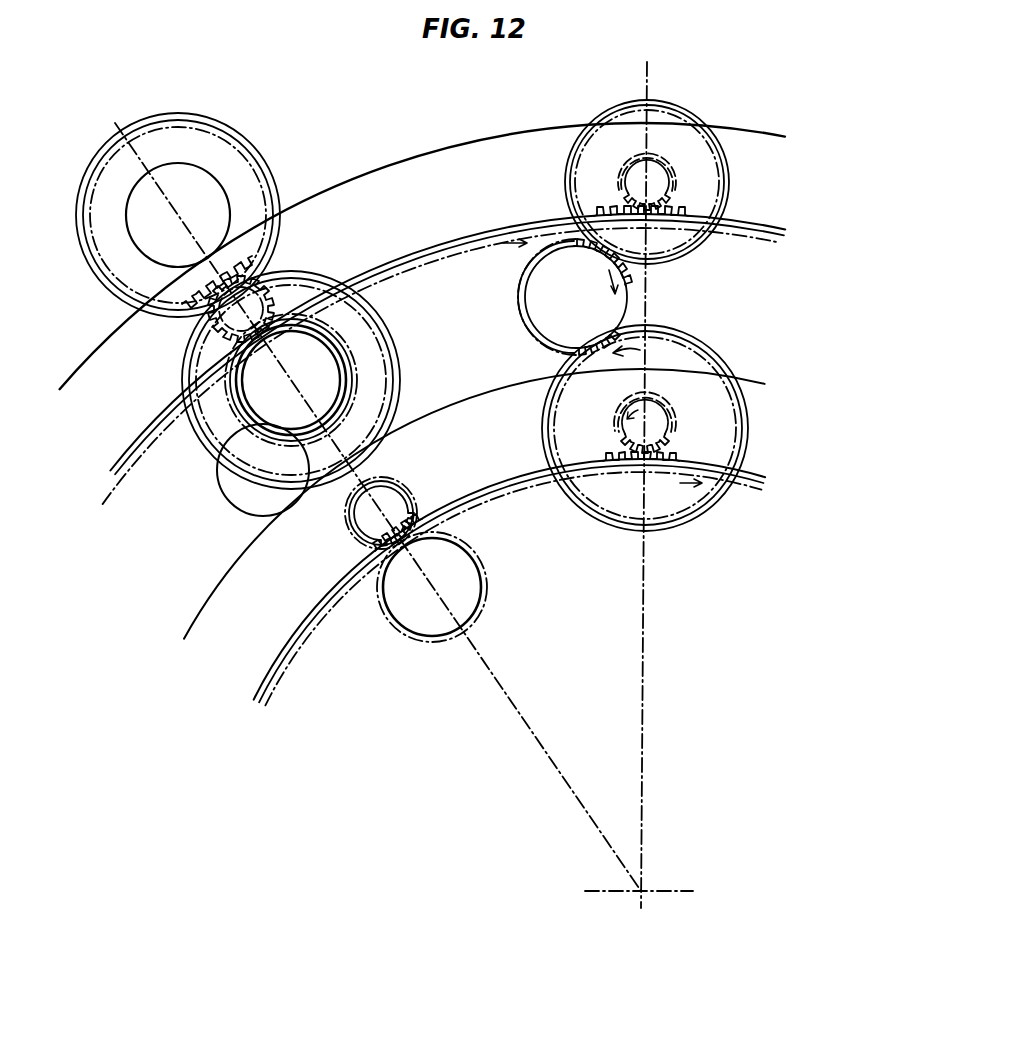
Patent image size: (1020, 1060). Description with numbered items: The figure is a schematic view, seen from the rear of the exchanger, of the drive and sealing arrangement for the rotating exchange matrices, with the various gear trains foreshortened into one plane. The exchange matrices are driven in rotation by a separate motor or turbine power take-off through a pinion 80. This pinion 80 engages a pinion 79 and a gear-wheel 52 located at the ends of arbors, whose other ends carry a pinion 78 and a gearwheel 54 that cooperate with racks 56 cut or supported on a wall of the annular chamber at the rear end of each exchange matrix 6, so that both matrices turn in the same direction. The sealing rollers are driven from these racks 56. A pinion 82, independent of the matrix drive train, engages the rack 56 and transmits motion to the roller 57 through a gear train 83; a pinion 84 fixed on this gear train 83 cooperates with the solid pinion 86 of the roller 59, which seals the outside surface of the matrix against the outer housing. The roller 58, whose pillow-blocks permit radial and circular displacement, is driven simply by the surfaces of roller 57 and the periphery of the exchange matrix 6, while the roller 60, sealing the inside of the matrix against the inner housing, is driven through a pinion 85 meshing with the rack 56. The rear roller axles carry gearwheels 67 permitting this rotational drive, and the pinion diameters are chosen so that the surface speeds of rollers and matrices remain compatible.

The exchange matrix 6 is at (126, 419).
The gear-wheel 52 is at (573, 393).
The gearwheel 54 is at (633, 430).
The rack 56 is at (436, 250).
The roller 57 is at (325, 367).
The roller 58 is at (238, 487).
The roller 59 is at (213, 190).
The roller 60 is at (412, 610).
The gearwheel 67 is at (425, 640).
The pinion 78 is at (677, 158).
The pinion 79 is at (580, 178).
The pinion 80 is at (537, 290).
The pinion 82 is at (253, 300).
The gear train 83 is at (345, 388).
The pinion 84 is at (203, 353).
The pinion 85 is at (362, 520).
The solid pinion 86 is at (270, 193).